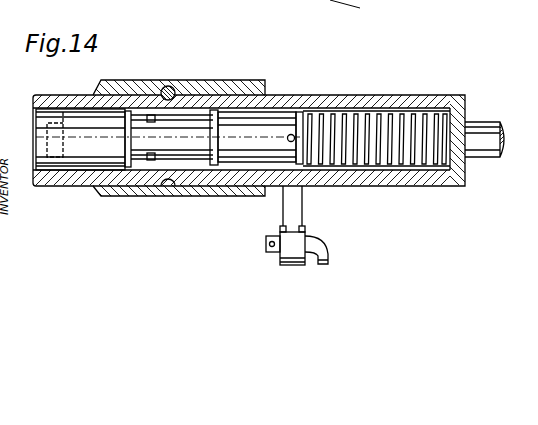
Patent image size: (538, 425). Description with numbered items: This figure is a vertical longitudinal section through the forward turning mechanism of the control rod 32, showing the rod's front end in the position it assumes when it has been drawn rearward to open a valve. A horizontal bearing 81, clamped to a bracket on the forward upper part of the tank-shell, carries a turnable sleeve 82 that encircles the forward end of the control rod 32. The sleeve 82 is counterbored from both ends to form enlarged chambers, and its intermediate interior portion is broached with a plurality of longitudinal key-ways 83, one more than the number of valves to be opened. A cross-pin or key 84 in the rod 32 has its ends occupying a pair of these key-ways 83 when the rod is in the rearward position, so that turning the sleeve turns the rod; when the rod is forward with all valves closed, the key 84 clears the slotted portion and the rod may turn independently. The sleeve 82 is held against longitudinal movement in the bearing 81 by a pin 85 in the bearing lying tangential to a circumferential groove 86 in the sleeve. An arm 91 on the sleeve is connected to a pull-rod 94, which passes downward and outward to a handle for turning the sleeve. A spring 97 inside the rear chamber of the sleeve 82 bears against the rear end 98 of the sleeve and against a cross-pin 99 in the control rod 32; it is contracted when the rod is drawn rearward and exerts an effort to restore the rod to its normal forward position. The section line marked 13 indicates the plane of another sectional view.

The section line 13 is at (169, 238).
The control rod 32 is at (34, 162).
The horizontal bearing 81 is at (232, 84).
The turnable sleeve 82 is at (301, 108).
The longitudinal key-ways 83 is at (137, 160).
The cross-pin or key 84 is at (60, 180).
The pin 85 is at (175, 87).
The circumferential groove 86 is at (190, 196).
The arm 91 is at (303, 202).
The pull-rod 94 is at (330, 246).
The spring 97 is at (418, 120).
The rear end of the sleeve 98 is at (468, 108).
The cross-pin 99 is at (336, 96).